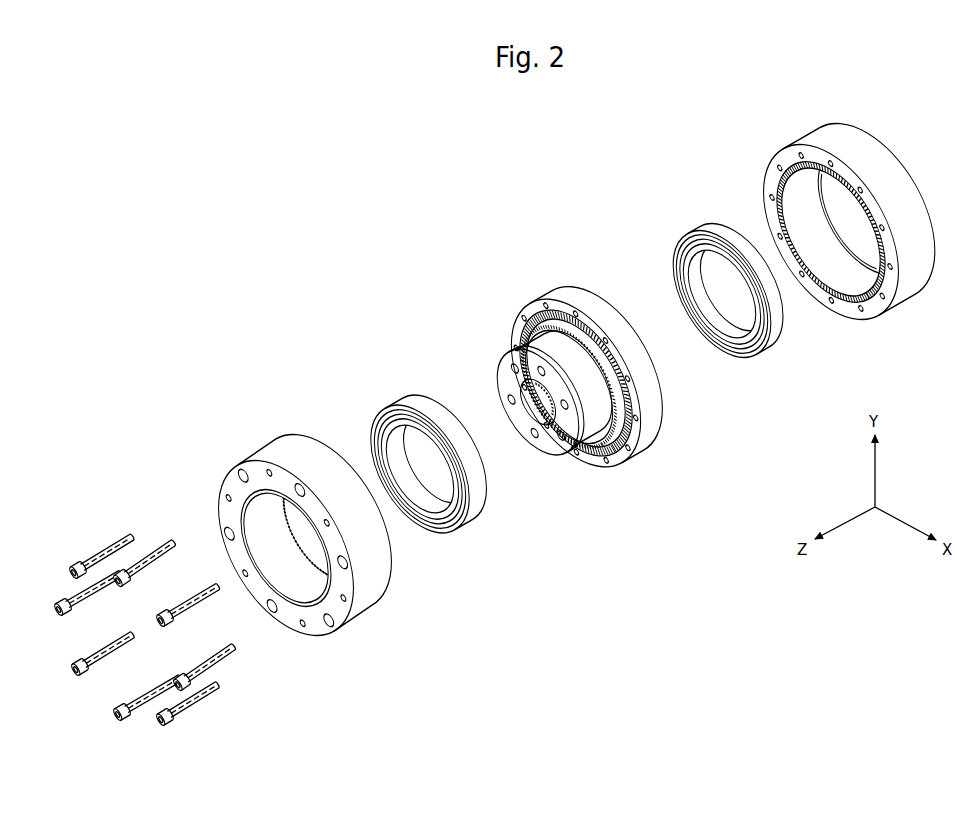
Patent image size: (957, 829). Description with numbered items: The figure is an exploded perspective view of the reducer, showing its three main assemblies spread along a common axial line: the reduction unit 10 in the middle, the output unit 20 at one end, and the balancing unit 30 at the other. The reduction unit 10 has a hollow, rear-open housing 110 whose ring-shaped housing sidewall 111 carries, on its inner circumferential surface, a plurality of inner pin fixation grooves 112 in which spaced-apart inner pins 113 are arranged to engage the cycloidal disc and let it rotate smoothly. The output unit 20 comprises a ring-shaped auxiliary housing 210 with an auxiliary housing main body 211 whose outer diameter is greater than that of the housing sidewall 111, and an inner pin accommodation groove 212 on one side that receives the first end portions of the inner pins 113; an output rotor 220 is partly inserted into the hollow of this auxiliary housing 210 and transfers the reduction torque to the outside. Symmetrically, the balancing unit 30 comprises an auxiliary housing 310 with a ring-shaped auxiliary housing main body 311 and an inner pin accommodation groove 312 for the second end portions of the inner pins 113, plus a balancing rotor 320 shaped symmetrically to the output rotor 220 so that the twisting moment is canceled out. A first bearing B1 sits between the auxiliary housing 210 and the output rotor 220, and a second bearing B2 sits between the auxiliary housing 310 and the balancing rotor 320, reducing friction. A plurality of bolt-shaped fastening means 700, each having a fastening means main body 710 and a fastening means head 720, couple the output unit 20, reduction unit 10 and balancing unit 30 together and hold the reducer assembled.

The reduction unit 10 is at (514, 272).
The output unit 20 is at (306, 380).
The balancing unit 30 is at (782, 125).
The housing 110 is at (613, 474).
The housing sidewall 111 is at (541, 297).
The inner pin fixation grooves 112 is at (567, 298).
The inner pins 113 is at (601, 300).
The auxiliary housing to the side of the output unit 210 is at (596, 547).
The auxiliary housing main body to the side of the output unit 211 is at (268, 455).
The inner pin accommodation groove to the side of the output unit 212 is at (359, 637).
The output rotor 220 is at (492, 374).
The auxiliary housing to the side of the balancing unit 310 is at (904, 321).
The auxiliary housing main body to the side of the balancing unit 311 is at (851, 133).
The inner pin accommodation groove to the side of the balancing unit 312 is at (866, 182).
The balancing rotor 320 is at (670, 382).
The fastening means 700 is at (113, 548).
The fastening means main body 710 is at (174, 555).
The fastening means head 720 is at (124, 587).
The first bearing B1 is at (405, 397).
The second bearing B2 is at (700, 227).